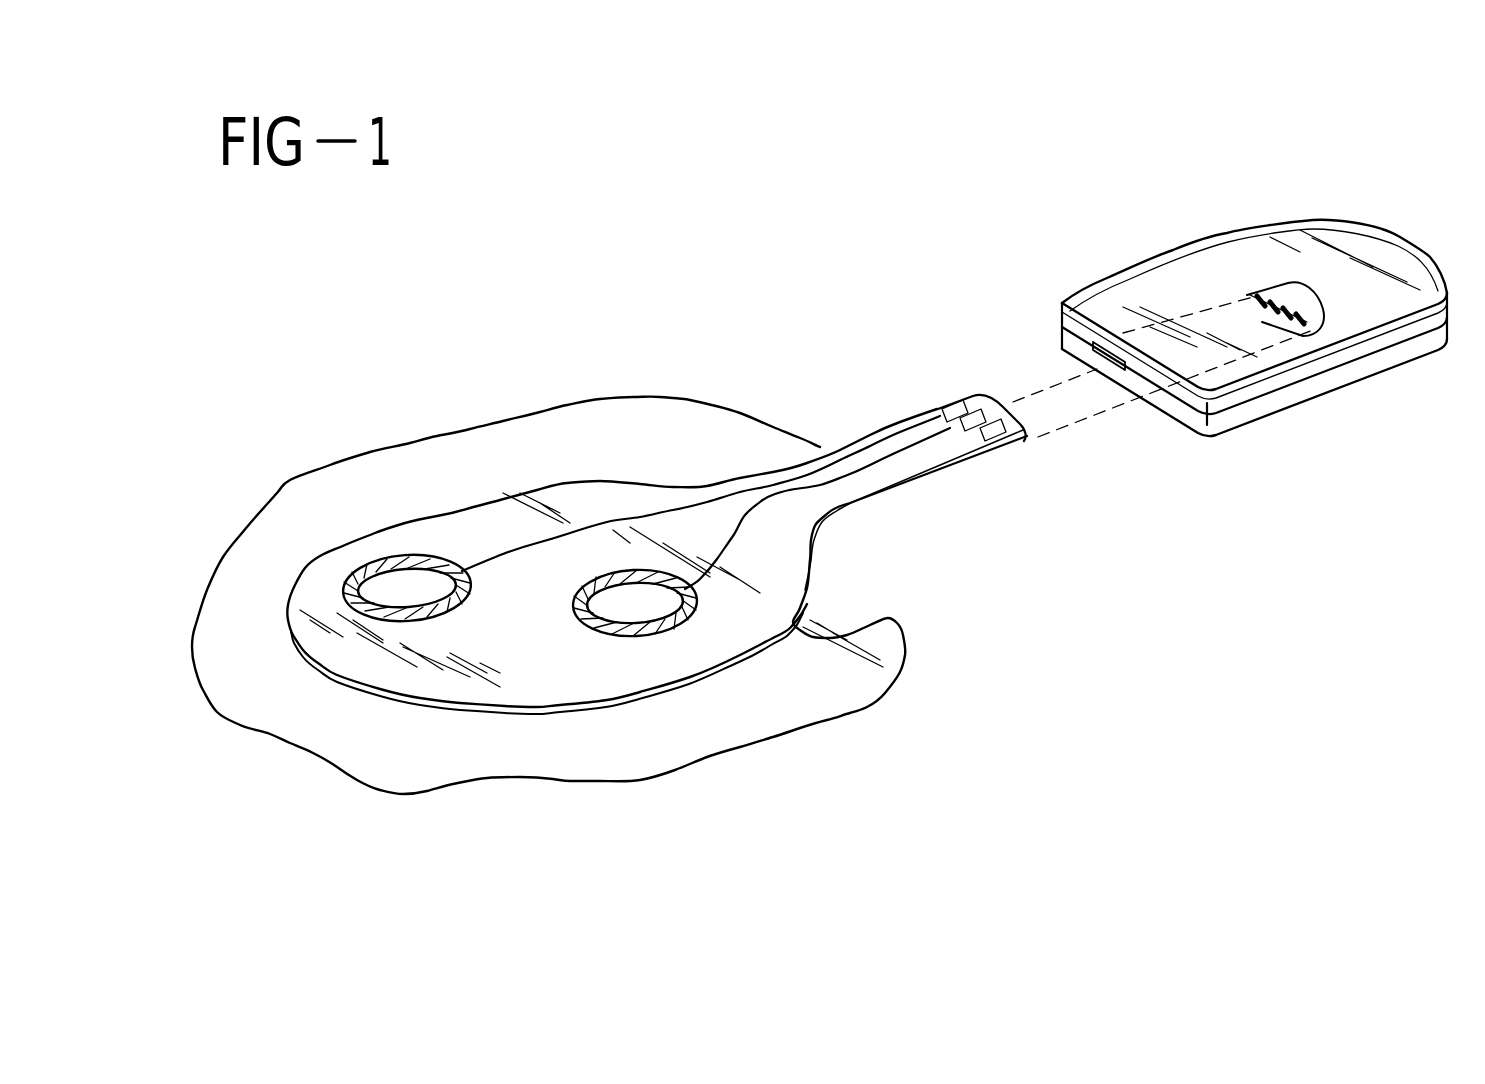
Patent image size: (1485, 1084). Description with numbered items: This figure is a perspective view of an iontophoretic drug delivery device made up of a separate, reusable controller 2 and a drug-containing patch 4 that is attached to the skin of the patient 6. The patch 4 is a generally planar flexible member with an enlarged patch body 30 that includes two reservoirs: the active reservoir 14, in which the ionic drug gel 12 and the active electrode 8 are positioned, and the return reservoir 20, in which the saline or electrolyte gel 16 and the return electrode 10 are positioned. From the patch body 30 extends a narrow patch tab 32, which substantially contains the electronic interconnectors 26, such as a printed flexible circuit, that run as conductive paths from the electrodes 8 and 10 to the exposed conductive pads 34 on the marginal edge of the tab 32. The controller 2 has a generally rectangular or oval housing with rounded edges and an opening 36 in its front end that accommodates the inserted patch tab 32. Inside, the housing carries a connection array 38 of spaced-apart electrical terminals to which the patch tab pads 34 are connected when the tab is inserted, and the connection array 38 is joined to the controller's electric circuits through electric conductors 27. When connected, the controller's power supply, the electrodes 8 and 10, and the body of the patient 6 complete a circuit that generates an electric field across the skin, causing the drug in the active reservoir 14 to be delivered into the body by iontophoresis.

The controller 2 is at (1397, 233).
The patch 4 is at (337, 540).
The patient 6 is at (233, 590).
The active electrode 8 is at (418, 580).
The return electrode 10 is at (650, 613).
The ionic drug gel 12 is at (355, 603).
The active reservoir 14 is at (373, 556).
The saline or electrolyte gel 16 is at (580, 613).
The return reservoir 20 is at (700, 607).
The electronic interconnectors 26 is at (935, 413).
The electric conductors 27 is at (1293, 293).
The patch body 30 is at (903, 617).
The patch tab 32 is at (963, 463).
The conductive pads 34 is at (1020, 427).
The opening 36 is at (1102, 352).
The connection array 38 is at (1250, 297).